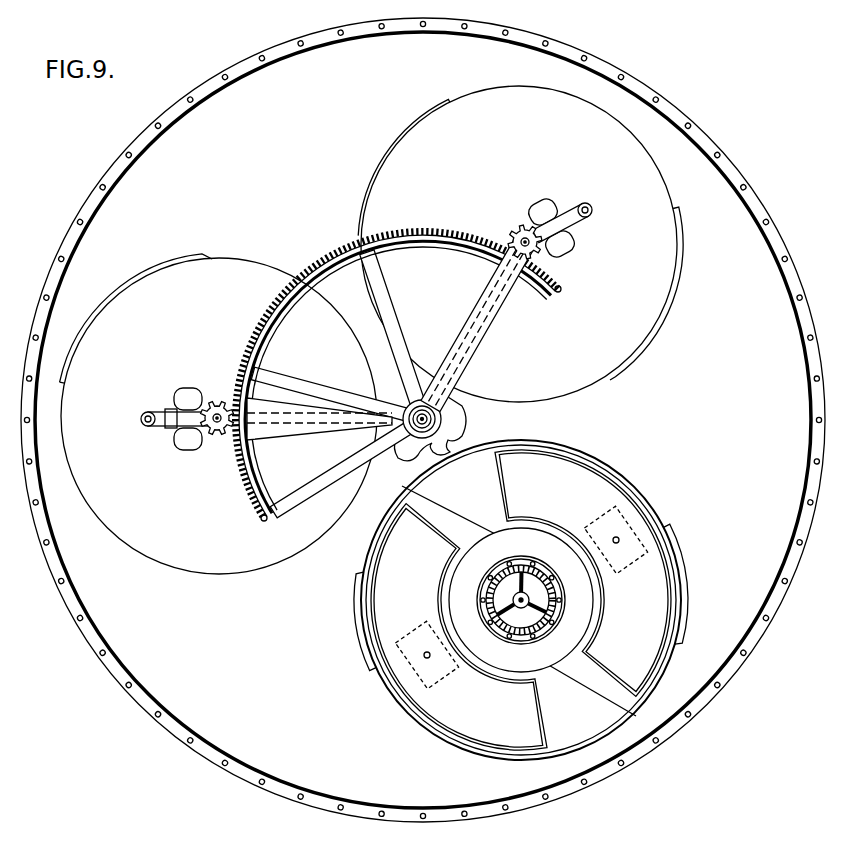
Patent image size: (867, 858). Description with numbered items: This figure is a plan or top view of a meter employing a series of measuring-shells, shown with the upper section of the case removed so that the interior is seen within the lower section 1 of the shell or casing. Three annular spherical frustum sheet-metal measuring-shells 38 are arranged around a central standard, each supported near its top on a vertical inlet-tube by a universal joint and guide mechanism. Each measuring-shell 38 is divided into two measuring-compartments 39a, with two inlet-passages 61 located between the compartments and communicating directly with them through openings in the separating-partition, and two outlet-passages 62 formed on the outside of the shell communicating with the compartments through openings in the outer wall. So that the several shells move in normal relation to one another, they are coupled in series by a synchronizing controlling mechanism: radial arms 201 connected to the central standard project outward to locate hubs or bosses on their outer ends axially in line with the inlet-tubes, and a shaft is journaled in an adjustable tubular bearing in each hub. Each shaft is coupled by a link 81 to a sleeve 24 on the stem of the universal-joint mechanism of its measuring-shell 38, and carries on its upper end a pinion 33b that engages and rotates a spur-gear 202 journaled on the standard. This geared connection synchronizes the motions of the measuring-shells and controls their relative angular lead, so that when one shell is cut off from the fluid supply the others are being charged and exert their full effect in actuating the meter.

The lower section 1 is at (136, 691).
The sleeve 24 is at (579, 231).
The pinion 33b is at (511, 233).
The measuring-shell 38 is at (371, 424).
The measuring-compartment 39a is at (521, 600).
The inlet-passage 61 is at (519, 601).
The outlet-passage 62 is at (356, 607).
The link 81 is at (543, 222).
The radial arm 201 is at (391, 352).
The spur-gear 202 is at (379, 198).